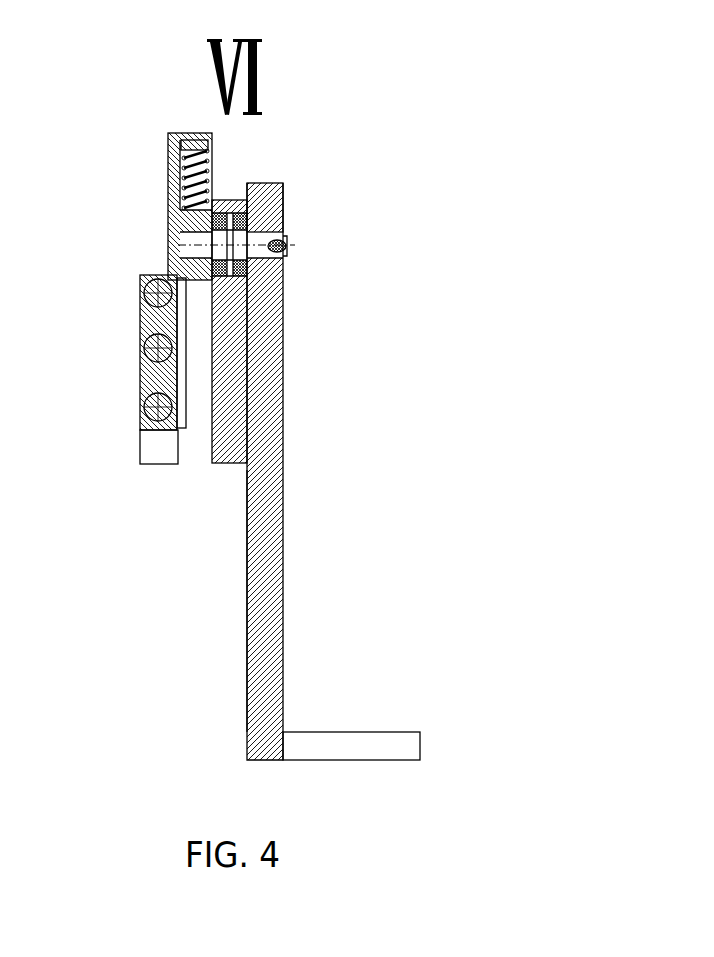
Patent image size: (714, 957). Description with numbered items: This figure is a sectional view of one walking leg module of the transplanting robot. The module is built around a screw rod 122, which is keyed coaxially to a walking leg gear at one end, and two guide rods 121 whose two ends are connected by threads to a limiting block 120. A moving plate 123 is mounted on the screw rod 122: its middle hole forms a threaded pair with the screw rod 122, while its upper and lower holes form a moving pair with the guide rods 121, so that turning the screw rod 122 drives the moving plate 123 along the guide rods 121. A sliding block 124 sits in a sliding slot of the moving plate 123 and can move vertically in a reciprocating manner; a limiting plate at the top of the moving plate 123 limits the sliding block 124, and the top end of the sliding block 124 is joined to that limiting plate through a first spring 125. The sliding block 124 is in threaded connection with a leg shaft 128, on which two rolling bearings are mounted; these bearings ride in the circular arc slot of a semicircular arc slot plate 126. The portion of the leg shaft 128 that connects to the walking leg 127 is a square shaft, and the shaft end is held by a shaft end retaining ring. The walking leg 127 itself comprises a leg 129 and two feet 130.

The limiting block 120 is at (150, 447).
The guide rods 121 is at (157, 280).
The screw rod 122 is at (140, 310).
The moving plate 123 is at (148, 275).
The sliding block 124 is at (265, 205).
The first spring 125 is at (210, 190).
The semicircular arc slot plate 126 is at (360, 387).
The walking leg 127 is at (358, 573).
The leg shaft 128 is at (262, 252).
The leg 129 is at (265, 350).
The feet 130 is at (330, 745).